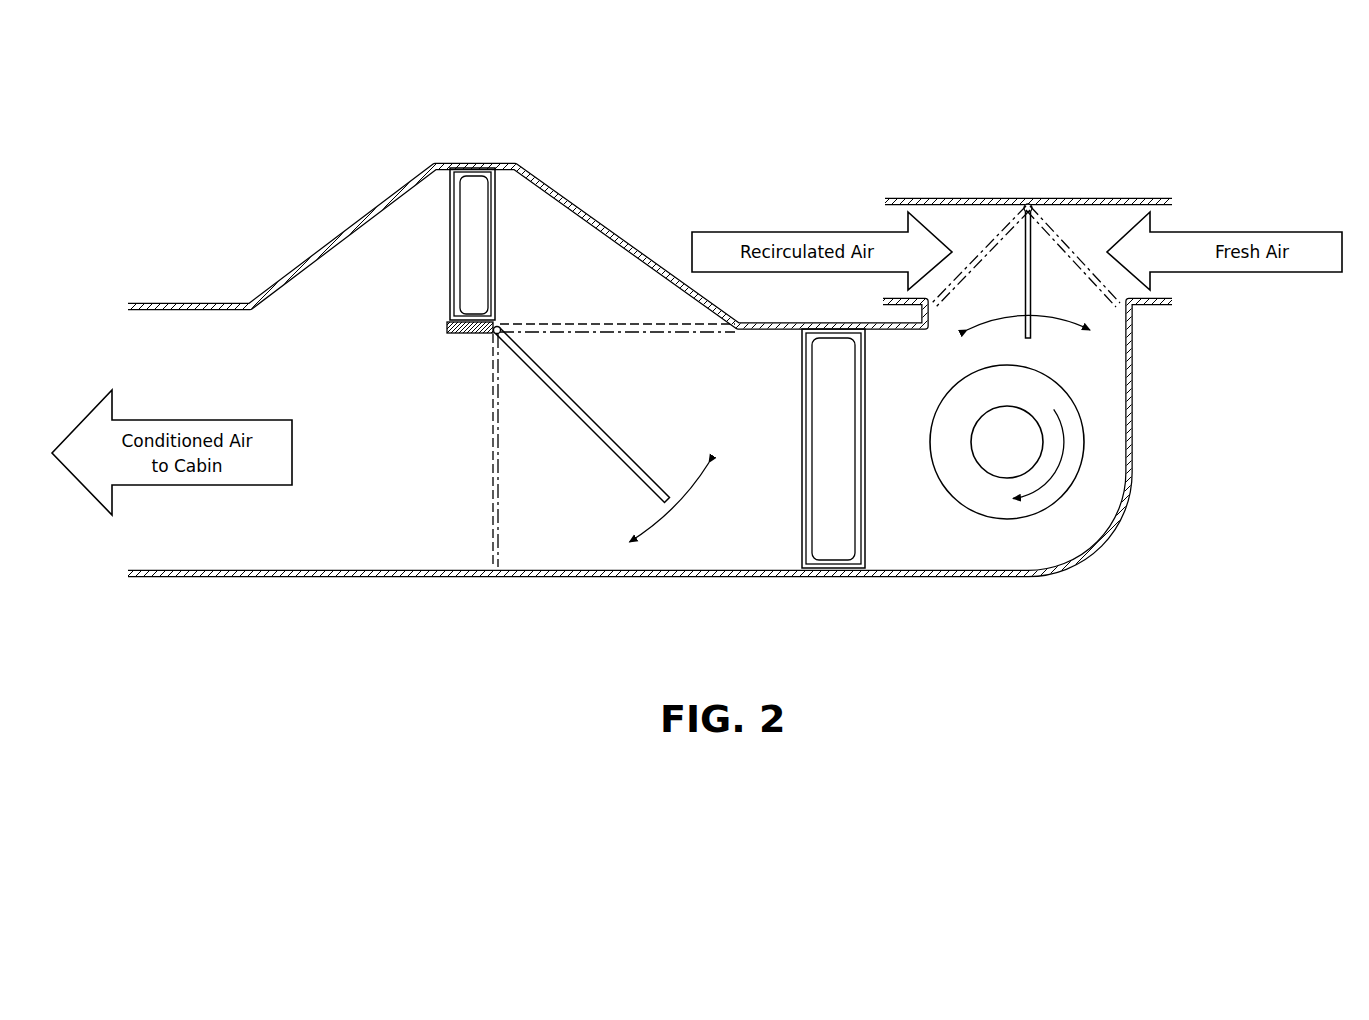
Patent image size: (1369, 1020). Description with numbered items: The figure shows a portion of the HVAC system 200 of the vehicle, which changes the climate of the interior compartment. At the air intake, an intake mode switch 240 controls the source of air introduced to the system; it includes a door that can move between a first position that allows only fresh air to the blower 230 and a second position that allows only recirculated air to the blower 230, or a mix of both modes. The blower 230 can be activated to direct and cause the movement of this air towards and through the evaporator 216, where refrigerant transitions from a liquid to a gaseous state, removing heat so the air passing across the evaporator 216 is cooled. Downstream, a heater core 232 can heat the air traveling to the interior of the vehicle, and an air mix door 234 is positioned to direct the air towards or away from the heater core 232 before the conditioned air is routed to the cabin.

The HVAC system 200 is at (255, 198).
The evaporator 216 is at (832, 543).
The blower 230 is at (1017, 517).
The heater core 232 is at (467, 215).
The air mix door 234 is at (552, 378).
The intake mode switch 240 is at (1033, 257).